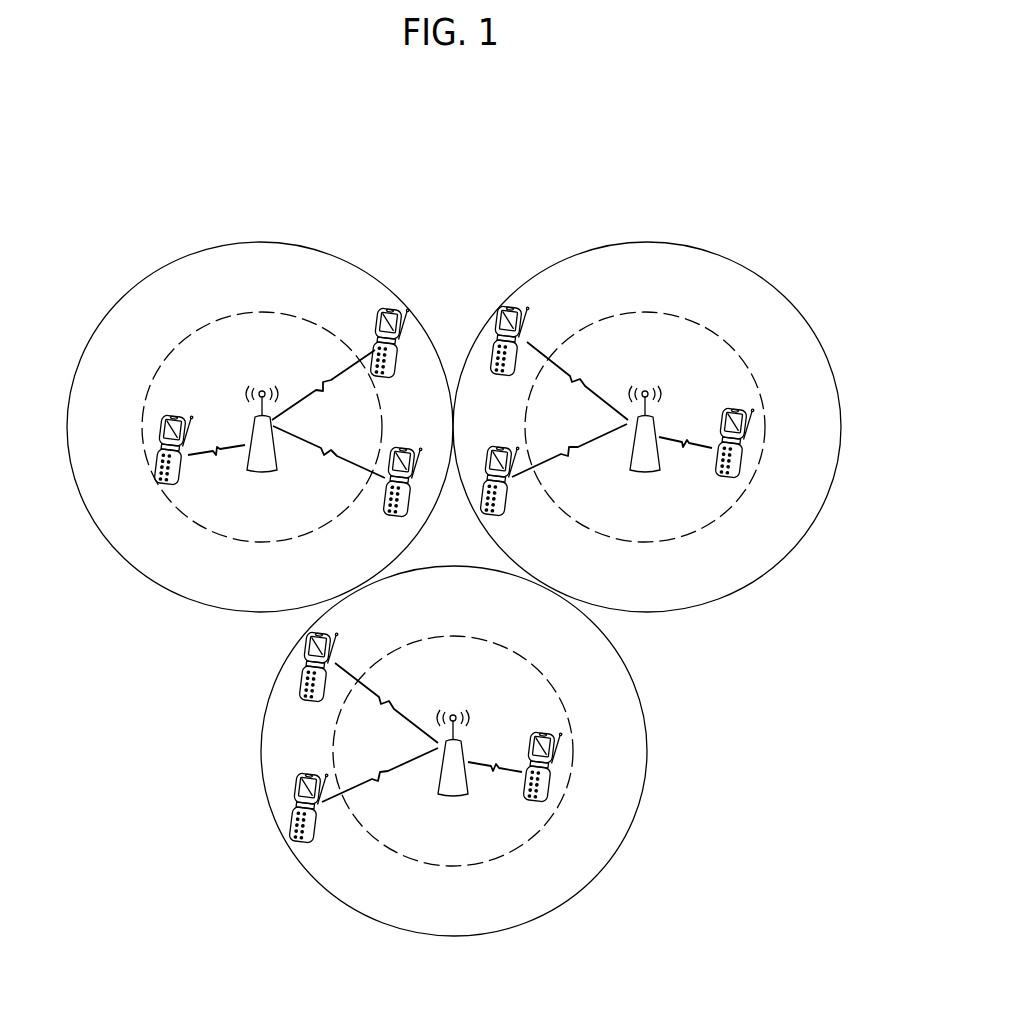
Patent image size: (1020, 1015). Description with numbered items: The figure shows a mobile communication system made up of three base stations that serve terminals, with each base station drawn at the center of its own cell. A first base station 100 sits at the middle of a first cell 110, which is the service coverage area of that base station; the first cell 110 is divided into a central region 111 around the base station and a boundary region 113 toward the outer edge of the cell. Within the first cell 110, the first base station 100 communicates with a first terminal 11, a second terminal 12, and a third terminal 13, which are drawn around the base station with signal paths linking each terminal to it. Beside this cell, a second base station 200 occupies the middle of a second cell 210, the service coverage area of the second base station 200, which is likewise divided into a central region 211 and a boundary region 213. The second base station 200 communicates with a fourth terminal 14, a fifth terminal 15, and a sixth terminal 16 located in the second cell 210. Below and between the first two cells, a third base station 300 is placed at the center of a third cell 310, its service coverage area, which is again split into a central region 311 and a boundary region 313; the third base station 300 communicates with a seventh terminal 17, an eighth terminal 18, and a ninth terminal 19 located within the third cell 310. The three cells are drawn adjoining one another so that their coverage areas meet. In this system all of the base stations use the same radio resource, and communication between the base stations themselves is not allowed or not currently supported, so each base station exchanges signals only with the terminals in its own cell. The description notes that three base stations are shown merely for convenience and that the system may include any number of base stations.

The first base station 100 is at (252, 425).
The second base station 200 is at (653, 417).
The third base station 300 is at (442, 792).
The first cell 110 is at (253, 240).
The second cell 210 is at (632, 240).
The third cell 310 is at (645, 748).
The central region 111 is at (213, 513).
The central region 211 is at (683, 513).
The central region 311 is at (492, 837).
The boundary region 113 is at (152, 570).
The boundary region 213 is at (752, 568).
The boundary region 313 is at (552, 882).
The first terminal 11 is at (167, 410).
The second terminal 12 is at (378, 317).
The third terminal 13 is at (387, 500).
The fourth terminal 14 is at (524, 320).
The fifth terminal 15 is at (503, 500).
The sixth terminal 16 is at (727, 413).
The seventh terminal 17 is at (300, 688).
The eighth terminal 18 is at (292, 825).
The ninth terminal 19 is at (567, 787).